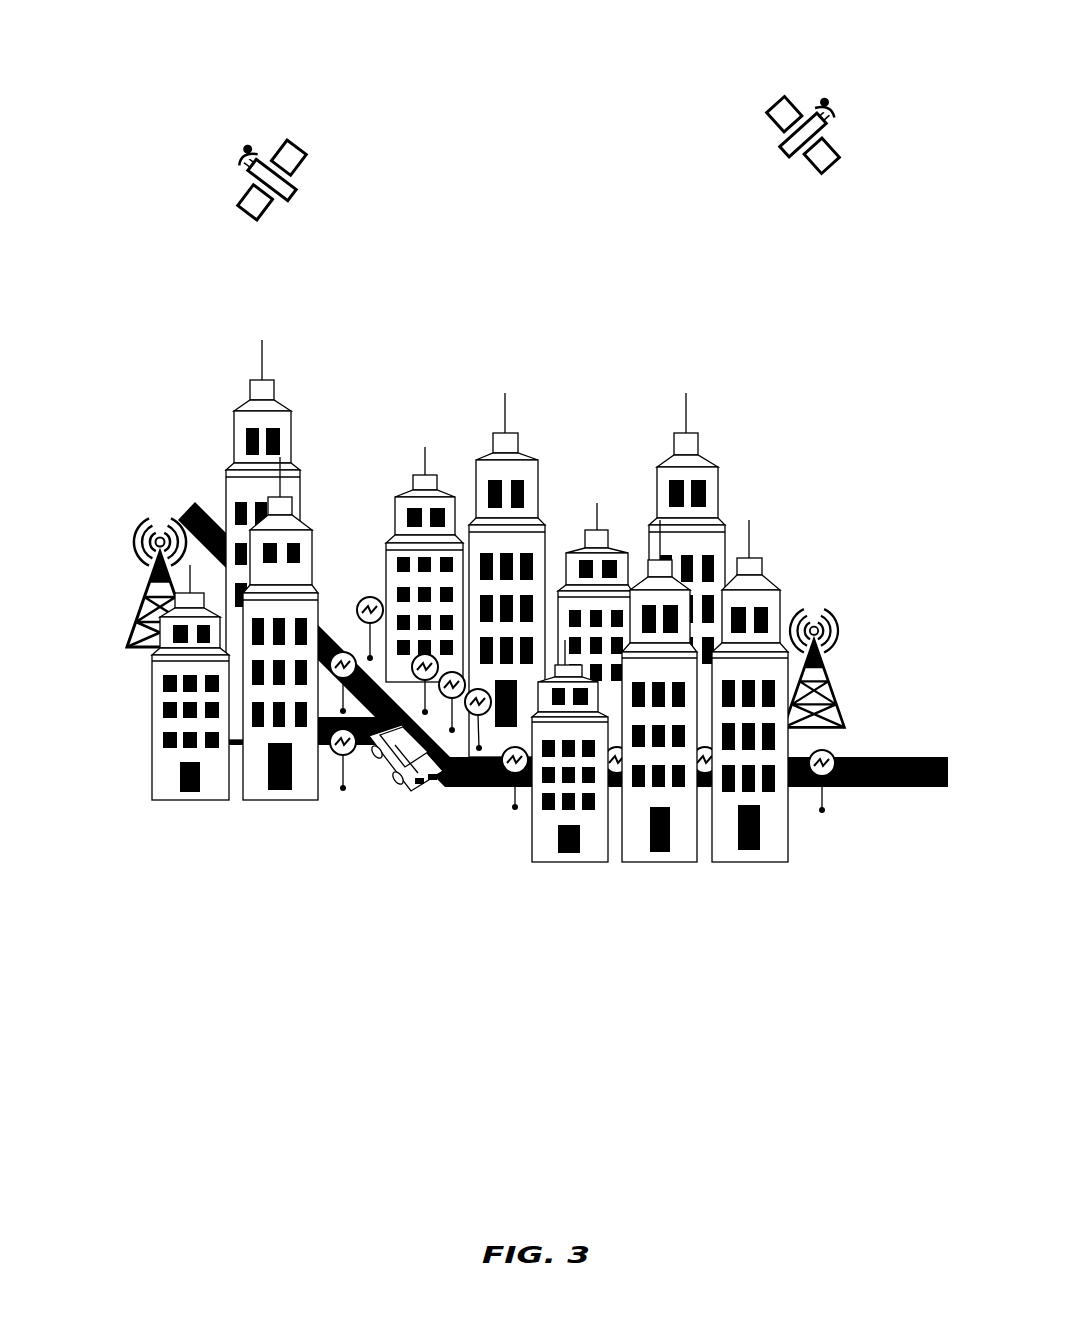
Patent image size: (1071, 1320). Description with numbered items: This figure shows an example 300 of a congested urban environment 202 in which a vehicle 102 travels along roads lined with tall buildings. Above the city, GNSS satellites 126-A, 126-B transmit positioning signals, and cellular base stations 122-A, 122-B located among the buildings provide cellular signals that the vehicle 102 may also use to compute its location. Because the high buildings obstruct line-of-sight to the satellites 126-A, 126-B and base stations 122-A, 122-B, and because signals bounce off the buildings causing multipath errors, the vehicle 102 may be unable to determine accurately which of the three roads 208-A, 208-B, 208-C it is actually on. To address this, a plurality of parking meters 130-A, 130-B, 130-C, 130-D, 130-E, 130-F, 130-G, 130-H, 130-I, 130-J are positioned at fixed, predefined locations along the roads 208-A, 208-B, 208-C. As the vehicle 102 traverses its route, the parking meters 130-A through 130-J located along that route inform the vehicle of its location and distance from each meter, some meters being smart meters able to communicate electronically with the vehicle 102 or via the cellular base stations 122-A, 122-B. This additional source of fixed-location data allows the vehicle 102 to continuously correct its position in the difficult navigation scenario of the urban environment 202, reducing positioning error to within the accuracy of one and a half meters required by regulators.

The example 300 is at (150, 30).
The GNSS satellite 126-A is at (352, 216).
The GNSS satellite 126-B is at (865, 216).
The urban environment 202 is at (745, 486).
The cellular base station 122-A is at (135, 593).
The cellular base station 122-B is at (893, 680).
The road 208-A is at (837, 786).
The road 208-B is at (365, 748).
The road 208-C is at (195, 503).
The vehicle 102 is at (432, 815).
The parking meter 130-A is at (370, 597).
The parking meter 130-B is at (343, 652).
The parking meter 130-C is at (343, 788).
The parking meter 130-D is at (421, 654).
The parking meter 130-E is at (450, 672).
The parking meter 130-F is at (482, 690).
The parking meter 130-G is at (515, 807).
The parking meter 130-H is at (622, 803).
The parking meter 130-I is at (712, 807).
The parking meter 130-J is at (822, 810).